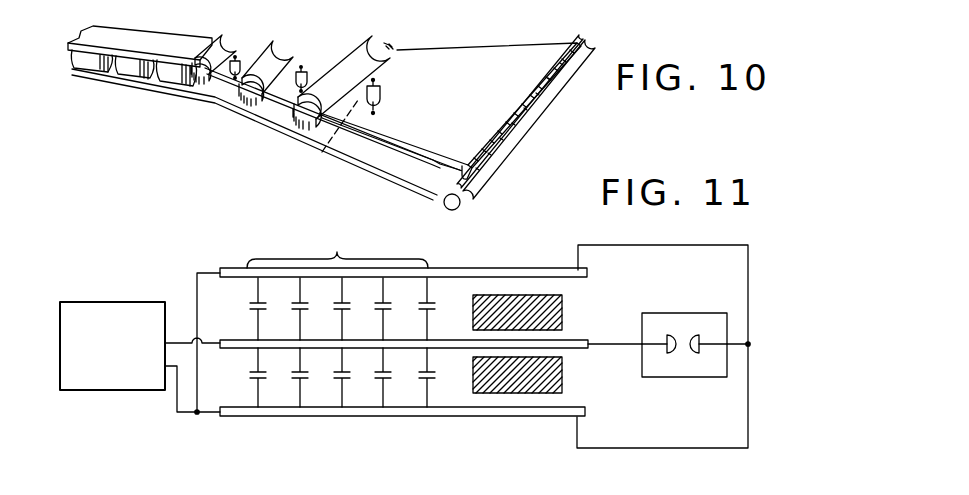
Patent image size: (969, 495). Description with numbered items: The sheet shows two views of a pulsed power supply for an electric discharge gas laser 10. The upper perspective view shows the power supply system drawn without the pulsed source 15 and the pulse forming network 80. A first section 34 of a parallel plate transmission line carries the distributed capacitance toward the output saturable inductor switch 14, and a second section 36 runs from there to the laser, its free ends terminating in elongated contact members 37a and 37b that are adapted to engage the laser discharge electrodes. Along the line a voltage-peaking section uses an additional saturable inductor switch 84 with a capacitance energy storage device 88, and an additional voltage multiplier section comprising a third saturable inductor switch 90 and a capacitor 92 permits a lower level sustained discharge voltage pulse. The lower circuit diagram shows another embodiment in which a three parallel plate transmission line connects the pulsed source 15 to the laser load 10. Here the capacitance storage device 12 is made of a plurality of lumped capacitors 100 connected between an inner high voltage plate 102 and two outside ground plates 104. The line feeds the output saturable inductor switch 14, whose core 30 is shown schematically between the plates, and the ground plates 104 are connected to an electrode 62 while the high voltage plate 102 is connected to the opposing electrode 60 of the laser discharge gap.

In FIG. 10, the electric discharge gas laser 10 is at (461, 206).
In FIG. 10, the output saturable inductor switch 14 is at (240, 58).
In FIG. 11, the output saturable inductor switch 14 is at (527, 290).
In FIG. 10, the first section of transmission line 34 is at (130, 90).
In FIG. 10, the second section of transmission line 36 is at (513, 25).
In FIG. 10, the contact member 37a is at (587, 42).
In FIG. 10, the contact member 37b is at (557, 100).
In FIG. 10, the pulse forming network 80 is at (259, 55).
In FIG. 10, the saturable inductor switch 84 is at (300, 52).
In FIG. 10, the capacitance energy storage device 88 is at (318, 70).
In FIG. 10, the third saturable inductor switch 90 is at (393, 50).
In FIG. 10, the capacitor 92 is at (331, 143).
In FIG. 11, the primary capacitance energy storage device 12 is at (337, 250).
In FIG. 11, the pulsed high-voltage source 15 is at (83, 392).
In FIG. 11, the core 30 is at (522, 395).
In FIG. 11, the electrode 60 is at (672, 333).
In FIG. 11, the electrode 62 is at (696, 333).
In FIG. 11, the lumped capacitor 100 is at (267, 307).
In FIG. 11, the high voltage plate 102 is at (573, 349).
In FIG. 11, the outside ground plate 104 is at (557, 269).